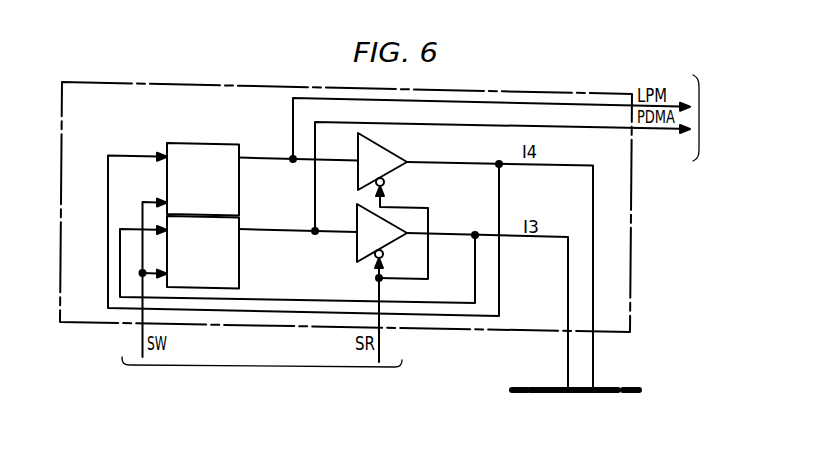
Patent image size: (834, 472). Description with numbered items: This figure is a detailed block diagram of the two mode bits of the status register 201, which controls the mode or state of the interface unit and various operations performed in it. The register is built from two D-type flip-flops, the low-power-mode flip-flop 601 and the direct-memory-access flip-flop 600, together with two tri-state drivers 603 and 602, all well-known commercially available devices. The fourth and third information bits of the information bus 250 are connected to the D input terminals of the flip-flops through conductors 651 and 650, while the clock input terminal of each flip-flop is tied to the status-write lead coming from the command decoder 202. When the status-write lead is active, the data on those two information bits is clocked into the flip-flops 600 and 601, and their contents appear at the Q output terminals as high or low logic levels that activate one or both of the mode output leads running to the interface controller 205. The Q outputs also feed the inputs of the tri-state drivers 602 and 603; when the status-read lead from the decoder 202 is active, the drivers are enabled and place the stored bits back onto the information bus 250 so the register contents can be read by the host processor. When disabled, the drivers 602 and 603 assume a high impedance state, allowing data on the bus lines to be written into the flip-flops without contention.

The status register 201 is at (190, 83).
The D-type flip-flop 601 is at (239, 184).
The D-type flip-flop 600 is at (239, 253).
The tri-state driver 603 is at (385, 147).
The tri-state driver 602 is at (357, 256).
The conductor 650 is at (499, 268).
The conductor 651 is at (475, 292).
The interface controller 205 is at (745, 118).
The decoder 202 is at (262, 397).
The information bus 250 is at (547, 394).